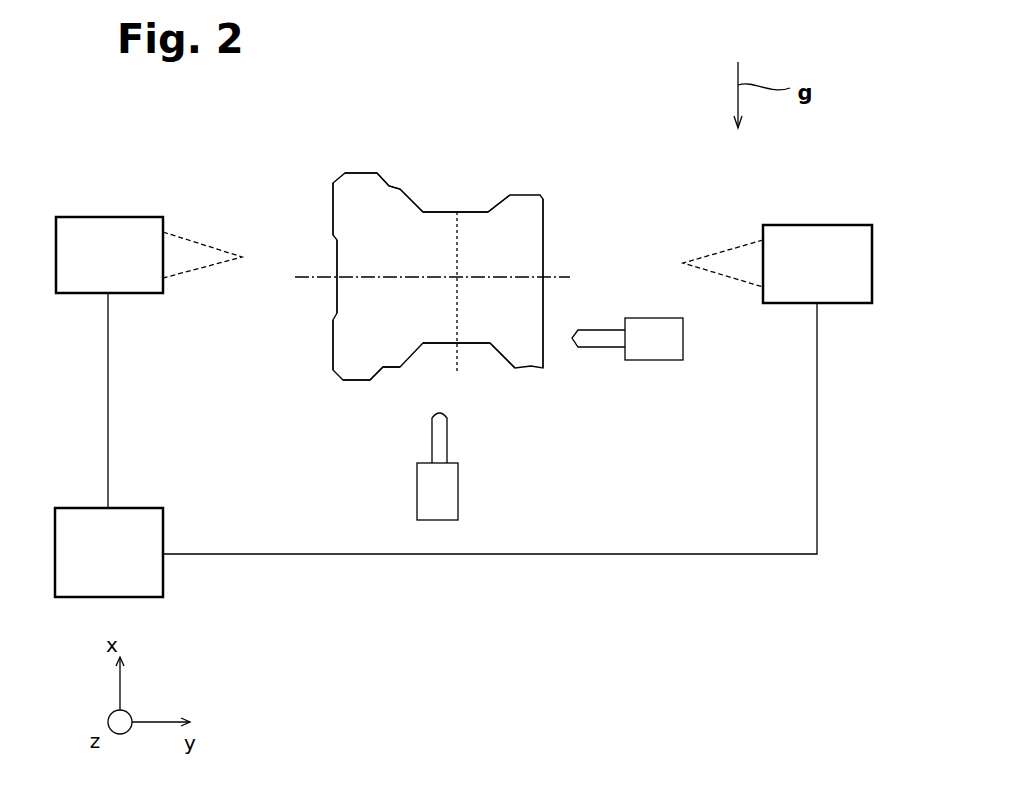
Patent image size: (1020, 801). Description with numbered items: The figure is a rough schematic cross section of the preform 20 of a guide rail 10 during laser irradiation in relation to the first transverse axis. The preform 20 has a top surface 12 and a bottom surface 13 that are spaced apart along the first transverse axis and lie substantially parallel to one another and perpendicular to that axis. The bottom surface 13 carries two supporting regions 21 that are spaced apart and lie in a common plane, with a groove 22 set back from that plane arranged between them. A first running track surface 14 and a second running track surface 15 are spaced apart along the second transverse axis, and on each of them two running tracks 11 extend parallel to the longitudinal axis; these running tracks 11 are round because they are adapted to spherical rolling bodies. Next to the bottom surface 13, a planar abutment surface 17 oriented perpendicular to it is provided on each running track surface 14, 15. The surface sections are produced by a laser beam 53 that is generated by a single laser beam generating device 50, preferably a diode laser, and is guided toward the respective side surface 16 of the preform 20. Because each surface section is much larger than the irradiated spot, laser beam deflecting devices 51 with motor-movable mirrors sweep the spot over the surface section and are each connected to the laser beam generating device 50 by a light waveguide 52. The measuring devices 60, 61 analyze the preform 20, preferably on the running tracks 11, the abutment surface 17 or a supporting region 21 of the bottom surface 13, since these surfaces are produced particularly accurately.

The workpiece / component 10 is at (475, 276).
The running track 11 is at (404, 190).
The top surface 12 is at (545, 258).
The bottom surface 13 is at (331, 345).
The first running track surface 14 is at (445, 210).
The second running track surface 15 is at (471, 345).
The side surface 16 is at (545, 212).
The abutment surface 17 is at (358, 174).
The preform 20 is at (432, 276).
The supporting region 21 is at (331, 213).
The groove 22 is at (335, 250).
The laser beam generating device 50 is at (143, 568).
The laser beam deflecting device 51 is at (105, 235).
The light waveguide 52 is at (108, 428).
The laser beam 53 is at (203, 240).
The measuring device 60 is at (660, 350).
The measuring device 61 is at (447, 495).